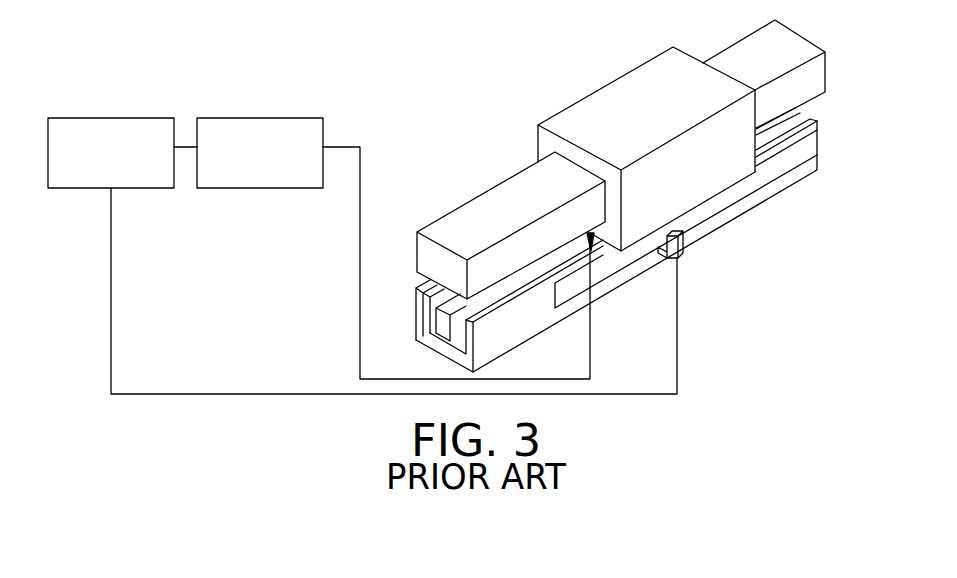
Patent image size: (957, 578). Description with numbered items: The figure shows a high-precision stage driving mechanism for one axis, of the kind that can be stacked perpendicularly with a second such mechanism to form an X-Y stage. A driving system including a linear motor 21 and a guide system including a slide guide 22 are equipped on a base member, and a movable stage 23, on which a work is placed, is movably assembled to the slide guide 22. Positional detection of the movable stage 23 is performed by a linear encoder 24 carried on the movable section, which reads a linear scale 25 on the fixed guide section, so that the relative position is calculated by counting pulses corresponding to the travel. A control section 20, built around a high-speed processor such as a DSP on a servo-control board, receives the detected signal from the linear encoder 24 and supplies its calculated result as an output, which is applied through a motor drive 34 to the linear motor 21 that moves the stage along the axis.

The control section 20 is at (130, 118).
The motor drive 34 is at (270, 118).
The linear motor 21 is at (590, 238).
The slide guide 22 is at (495, 186).
The movable stage 23 is at (607, 84).
The linear encoder 24 is at (684, 250).
The linear scale 25 is at (735, 197).